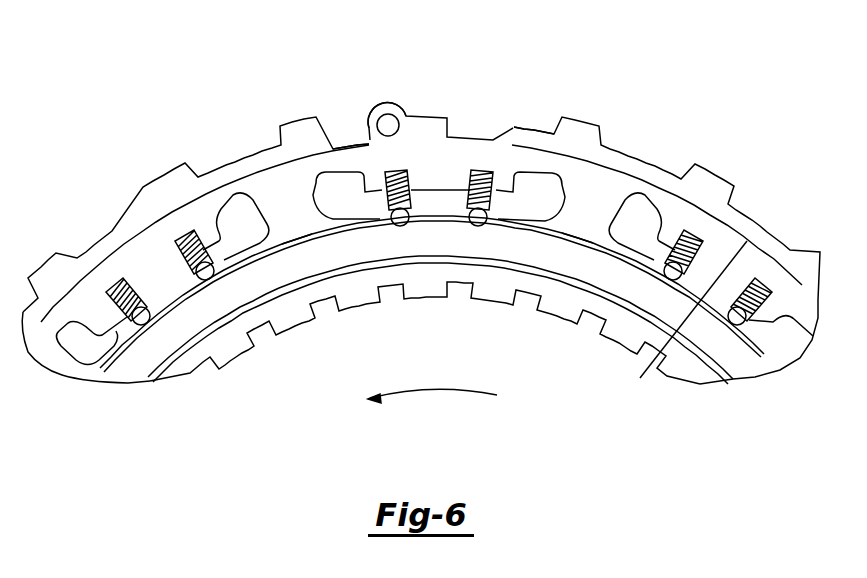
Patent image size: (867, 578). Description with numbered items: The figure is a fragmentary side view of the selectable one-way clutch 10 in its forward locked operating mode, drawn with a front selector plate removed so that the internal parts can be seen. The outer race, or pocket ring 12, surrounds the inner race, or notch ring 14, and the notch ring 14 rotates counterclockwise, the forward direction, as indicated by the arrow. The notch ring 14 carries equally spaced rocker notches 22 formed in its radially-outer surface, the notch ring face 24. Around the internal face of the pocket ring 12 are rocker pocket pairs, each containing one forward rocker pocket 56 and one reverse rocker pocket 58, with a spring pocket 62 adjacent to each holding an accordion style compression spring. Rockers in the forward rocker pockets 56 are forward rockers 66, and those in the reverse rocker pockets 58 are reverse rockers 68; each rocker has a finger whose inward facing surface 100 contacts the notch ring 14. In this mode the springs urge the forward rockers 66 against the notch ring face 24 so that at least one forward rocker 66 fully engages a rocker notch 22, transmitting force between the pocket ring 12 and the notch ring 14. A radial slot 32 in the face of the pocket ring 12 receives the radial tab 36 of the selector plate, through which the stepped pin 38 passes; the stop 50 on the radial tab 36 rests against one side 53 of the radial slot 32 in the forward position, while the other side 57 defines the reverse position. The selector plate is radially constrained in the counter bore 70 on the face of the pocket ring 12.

The selectable one-way clutch 10 is at (718, 98).
The pocket ring 12 is at (793, 225).
The notch ring 14 is at (622, 331).
The rocker notch 22 is at (292, 256).
The notch ring face 24 is at (576, 234).
The radial slot 32 is at (440, 170).
The radial tab 36 is at (406, 106).
The stepped pin 38 is at (387, 119).
The stop 50 is at (450, 128).
The side of the radial slot 53 is at (340, 133).
The forward rocker pocket 56 is at (82, 328).
The other side of the radial slot 57 is at (541, 133).
The reverse rocker pocket 58 is at (234, 216).
The spring pocket 62 is at (188, 252).
The forward rocker 66 is at (350, 204).
The reverse rocker 68 is at (528, 204).
The counter bore 70 is at (680, 317).
The inward facing surface 100 is at (227, 274).